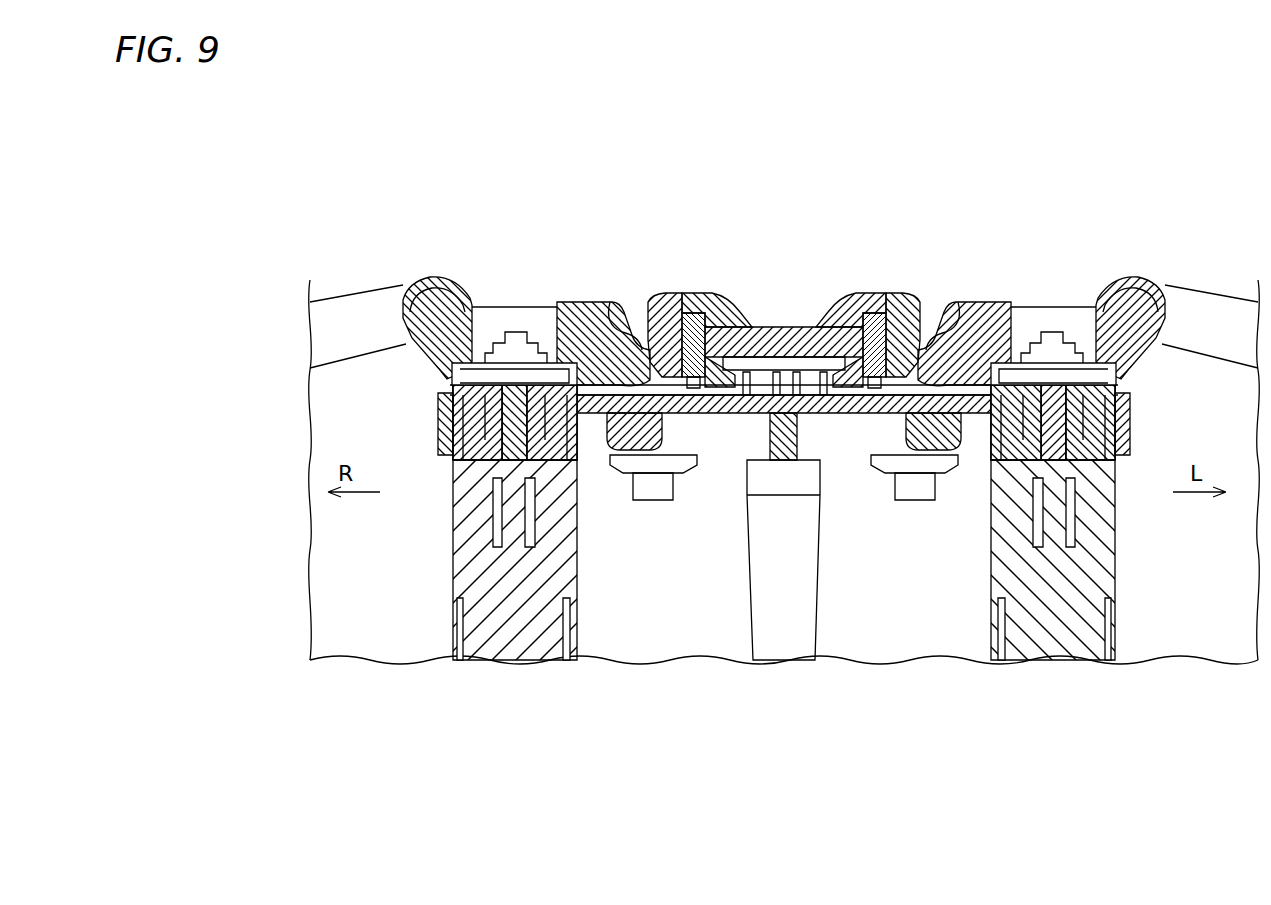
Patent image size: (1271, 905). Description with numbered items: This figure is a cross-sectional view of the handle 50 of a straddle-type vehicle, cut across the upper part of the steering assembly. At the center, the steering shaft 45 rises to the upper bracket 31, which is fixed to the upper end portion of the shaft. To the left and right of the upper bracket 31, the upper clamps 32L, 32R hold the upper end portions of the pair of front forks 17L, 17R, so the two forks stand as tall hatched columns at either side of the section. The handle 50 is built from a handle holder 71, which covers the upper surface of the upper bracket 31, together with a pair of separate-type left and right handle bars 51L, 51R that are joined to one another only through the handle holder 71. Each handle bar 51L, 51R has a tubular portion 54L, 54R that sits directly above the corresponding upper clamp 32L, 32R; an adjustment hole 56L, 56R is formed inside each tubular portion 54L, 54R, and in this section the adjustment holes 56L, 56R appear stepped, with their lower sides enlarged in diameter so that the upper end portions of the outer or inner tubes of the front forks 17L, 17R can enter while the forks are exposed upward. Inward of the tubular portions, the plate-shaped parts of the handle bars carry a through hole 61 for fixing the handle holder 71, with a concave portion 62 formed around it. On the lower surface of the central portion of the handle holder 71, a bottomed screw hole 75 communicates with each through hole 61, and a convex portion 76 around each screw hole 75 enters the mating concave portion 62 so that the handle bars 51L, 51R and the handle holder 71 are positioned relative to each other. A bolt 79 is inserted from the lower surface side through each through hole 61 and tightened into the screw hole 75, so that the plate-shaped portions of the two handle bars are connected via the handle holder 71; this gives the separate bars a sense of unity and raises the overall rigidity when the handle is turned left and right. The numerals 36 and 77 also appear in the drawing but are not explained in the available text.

The front fork 17R is at (453, 542).
The front fork 17L is at (1115, 542).
The upper bracket 31 is at (1160, 398).
The upper clamp 32R is at (438, 412).
The upper clamp 32L is at (1132, 418).
The bracket 36 is at (625, 475).
The steering shaft 45 is at (815, 615).
The handle 50 is at (784, 335).
The handle bar 51R is at (380, 300).
The handle bar 51L is at (1188, 300).
The tubular portion 54R is at (573, 317).
The tubular portion 54L is at (995, 317).
The adjustment hole 56R is at (477, 330).
The adjustment hole 56L is at (1091, 330).
The through hole 61 is at (711, 335).
The concave portion 62 is at (667, 353).
The handle holder 71 is at (780, 327).
The screw hole 75 is at (690, 317).
The convex portion 76 is at (608, 310).
The projection 77 is at (655, 500).
The bolt 79 is at (703, 397).